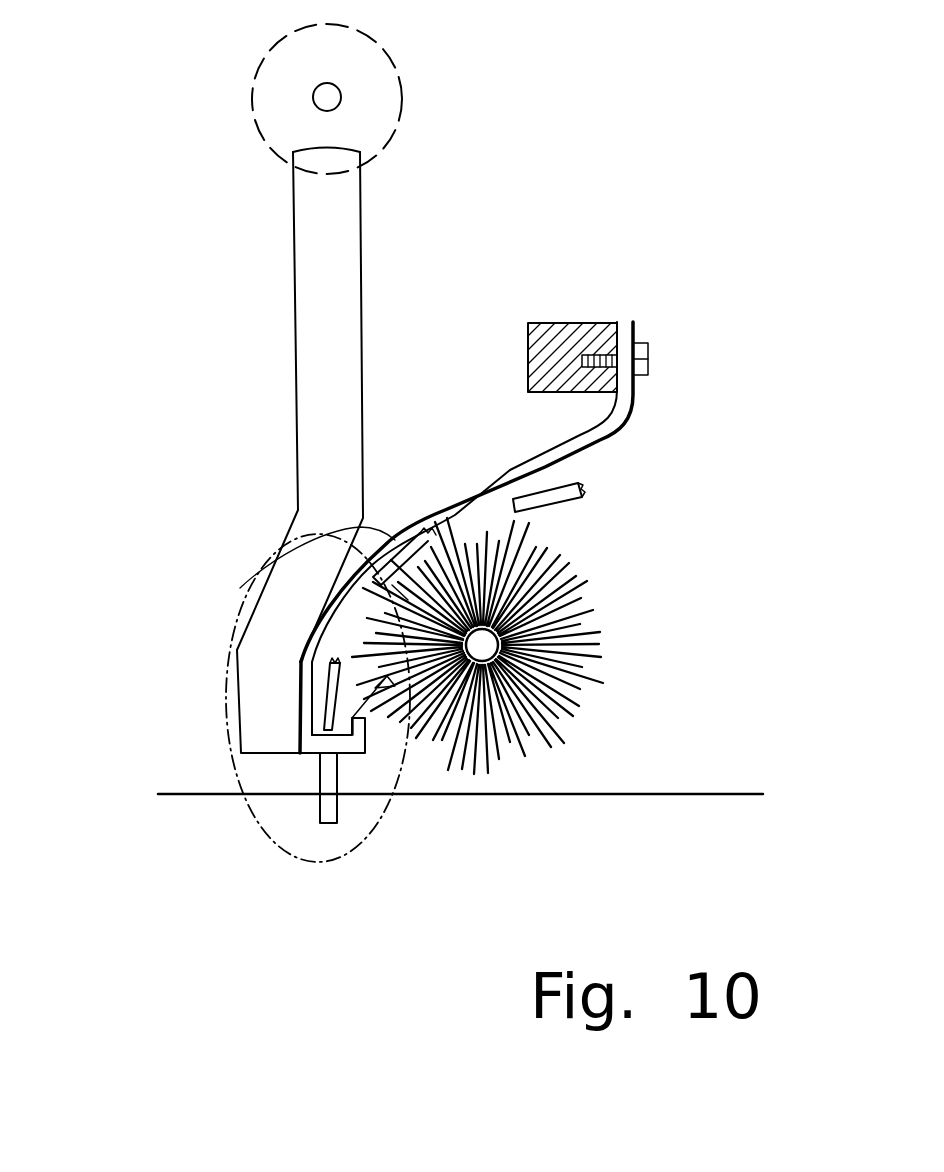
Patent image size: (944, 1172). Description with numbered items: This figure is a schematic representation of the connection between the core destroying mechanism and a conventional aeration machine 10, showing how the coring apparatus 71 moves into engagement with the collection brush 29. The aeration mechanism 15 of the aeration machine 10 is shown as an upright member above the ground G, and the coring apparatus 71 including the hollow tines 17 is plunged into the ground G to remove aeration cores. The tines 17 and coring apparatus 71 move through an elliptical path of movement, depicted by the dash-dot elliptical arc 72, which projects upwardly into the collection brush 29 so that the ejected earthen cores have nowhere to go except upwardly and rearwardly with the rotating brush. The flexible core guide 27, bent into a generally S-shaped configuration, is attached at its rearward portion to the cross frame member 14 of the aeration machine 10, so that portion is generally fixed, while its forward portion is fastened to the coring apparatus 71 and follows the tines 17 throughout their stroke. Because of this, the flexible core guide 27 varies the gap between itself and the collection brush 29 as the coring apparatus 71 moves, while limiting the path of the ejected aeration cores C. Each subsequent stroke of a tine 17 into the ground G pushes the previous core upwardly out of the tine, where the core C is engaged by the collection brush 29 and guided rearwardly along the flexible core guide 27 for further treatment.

The aeration machine 10 is at (180, 104).
The cross frame member 14 is at (560, 323).
The aeration mechanism 15 is at (296, 370).
The tines 17 is at (328, 823).
The flexible core guide 27 is at (588, 452).
The collection brush 29 is at (626, 677).
The coring apparatus 71 is at (275, 757).
The elliptical arc 72 is at (387, 817).
The aeration cores C is at (330, 690).
The ground G is at (730, 795).